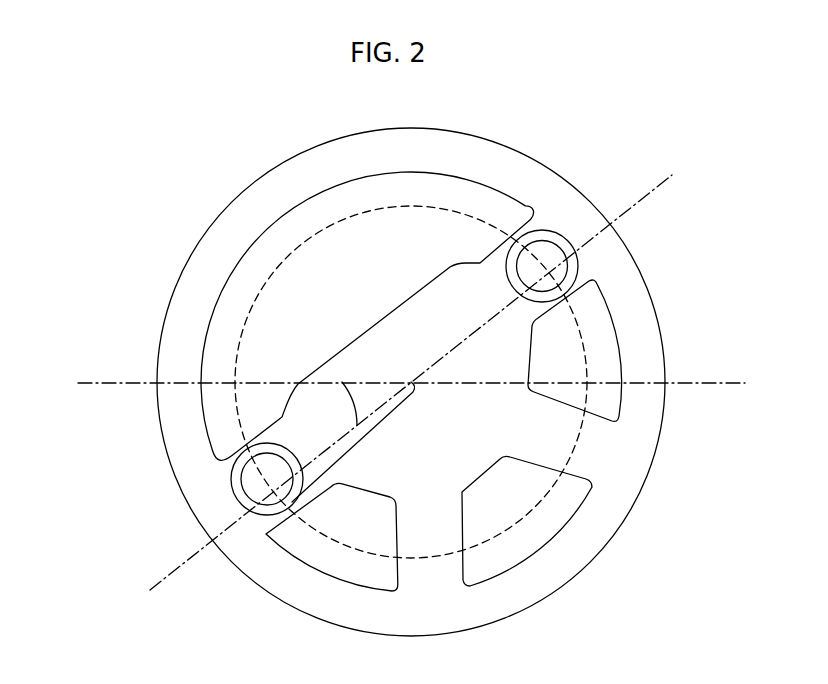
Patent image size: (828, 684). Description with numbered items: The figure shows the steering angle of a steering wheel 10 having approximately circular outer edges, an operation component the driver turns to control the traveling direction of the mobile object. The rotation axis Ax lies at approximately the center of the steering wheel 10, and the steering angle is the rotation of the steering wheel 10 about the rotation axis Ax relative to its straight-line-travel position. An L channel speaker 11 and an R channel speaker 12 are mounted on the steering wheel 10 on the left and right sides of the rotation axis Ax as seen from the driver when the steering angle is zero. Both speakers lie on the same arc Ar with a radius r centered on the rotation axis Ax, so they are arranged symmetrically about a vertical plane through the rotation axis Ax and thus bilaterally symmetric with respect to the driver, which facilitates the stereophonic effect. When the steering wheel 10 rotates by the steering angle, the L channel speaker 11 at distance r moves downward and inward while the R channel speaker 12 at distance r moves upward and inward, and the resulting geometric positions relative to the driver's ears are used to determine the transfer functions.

The steering wheel 10 is at (533, 181).
The L channel speaker 11 is at (241, 488).
The R channel speaker 12 is at (569, 270).
The rotation axis Ax is at (409, 379).
The arc Ar is at (528, 514).
The radius r is at (357, 441).